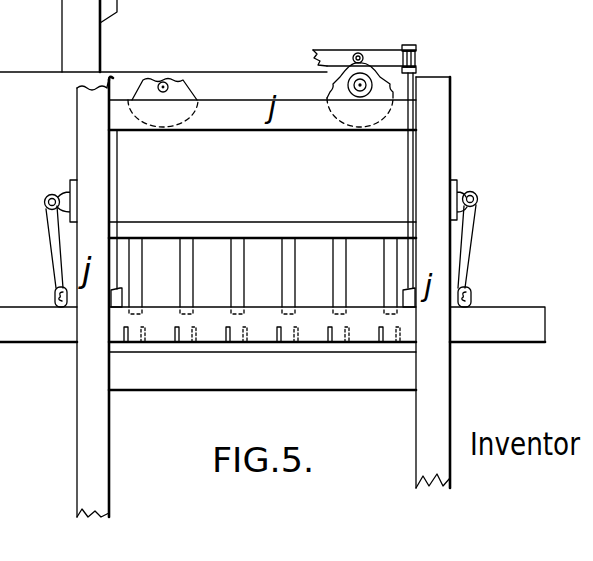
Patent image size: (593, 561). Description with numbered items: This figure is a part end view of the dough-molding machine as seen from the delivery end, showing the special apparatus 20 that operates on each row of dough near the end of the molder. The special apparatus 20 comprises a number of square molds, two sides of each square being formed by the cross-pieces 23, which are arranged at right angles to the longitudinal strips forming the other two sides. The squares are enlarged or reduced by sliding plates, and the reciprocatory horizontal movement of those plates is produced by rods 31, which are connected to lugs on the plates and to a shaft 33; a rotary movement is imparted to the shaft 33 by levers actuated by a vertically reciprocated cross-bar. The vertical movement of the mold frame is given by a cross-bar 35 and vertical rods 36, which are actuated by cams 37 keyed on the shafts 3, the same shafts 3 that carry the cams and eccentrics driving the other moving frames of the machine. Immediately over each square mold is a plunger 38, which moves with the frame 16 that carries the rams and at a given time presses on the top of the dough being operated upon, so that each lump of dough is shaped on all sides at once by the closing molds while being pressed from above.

The shaft 3 is at (361, 88).
The frame 16 is at (341, 224).
The special apparatus 20 is at (497, 324).
The cross-pieces 23 is at (143, 322).
The rods 31 is at (50, 255).
The shaft 33 is at (480, 193).
The cross-bar 35 is at (378, 56).
The vertical rods 36 is at (115, 172).
The cams 37 is at (332, 95).
The plunger 38 is at (390, 270).